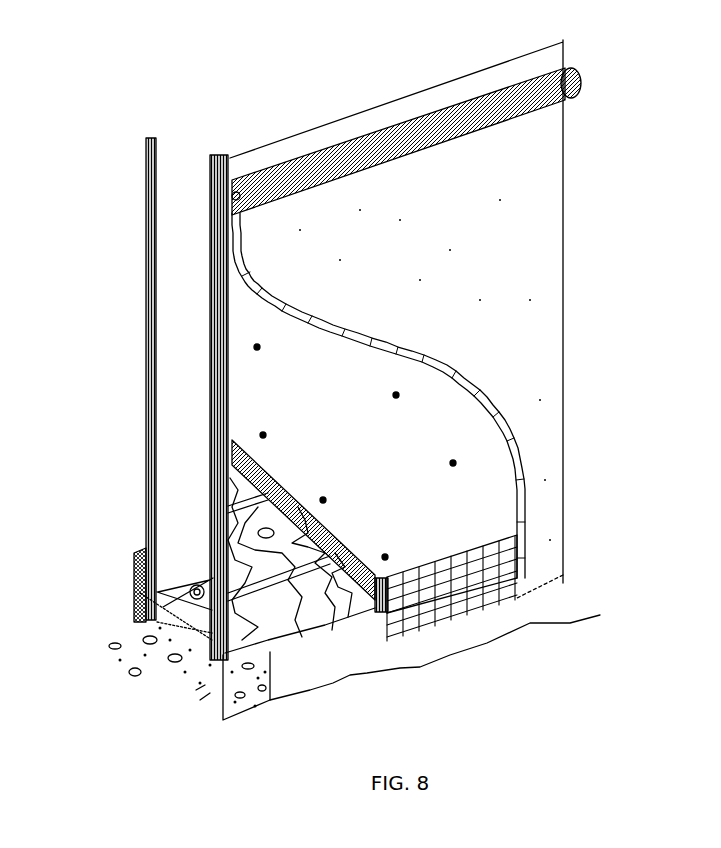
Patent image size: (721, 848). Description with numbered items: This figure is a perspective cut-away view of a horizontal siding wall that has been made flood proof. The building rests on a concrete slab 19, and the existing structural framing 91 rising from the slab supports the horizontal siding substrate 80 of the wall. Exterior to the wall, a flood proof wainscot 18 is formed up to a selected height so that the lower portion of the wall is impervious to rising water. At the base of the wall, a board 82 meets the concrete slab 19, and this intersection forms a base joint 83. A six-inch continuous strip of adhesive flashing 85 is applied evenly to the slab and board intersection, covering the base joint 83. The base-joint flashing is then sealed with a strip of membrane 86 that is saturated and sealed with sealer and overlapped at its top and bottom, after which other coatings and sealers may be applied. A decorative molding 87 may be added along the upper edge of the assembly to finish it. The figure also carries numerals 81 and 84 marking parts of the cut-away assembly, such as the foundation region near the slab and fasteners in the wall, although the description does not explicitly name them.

The flood proof wainscot 18 is at (535, 331).
The concrete slab 19 is at (212, 687).
The horizontal siding substrate 80 is at (247, 640).
The foundation 81 is at (165, 627).
The board 82 is at (375, 433).
The base joint 83 is at (277, 653).
The fasteners 84 is at (323, 500).
The adhesive flashing 85 is at (520, 562).
The membrane 86 is at (500, 600).
The decorative molding 87 is at (578, 87).
The existing structural framing 91 is at (168, 612).